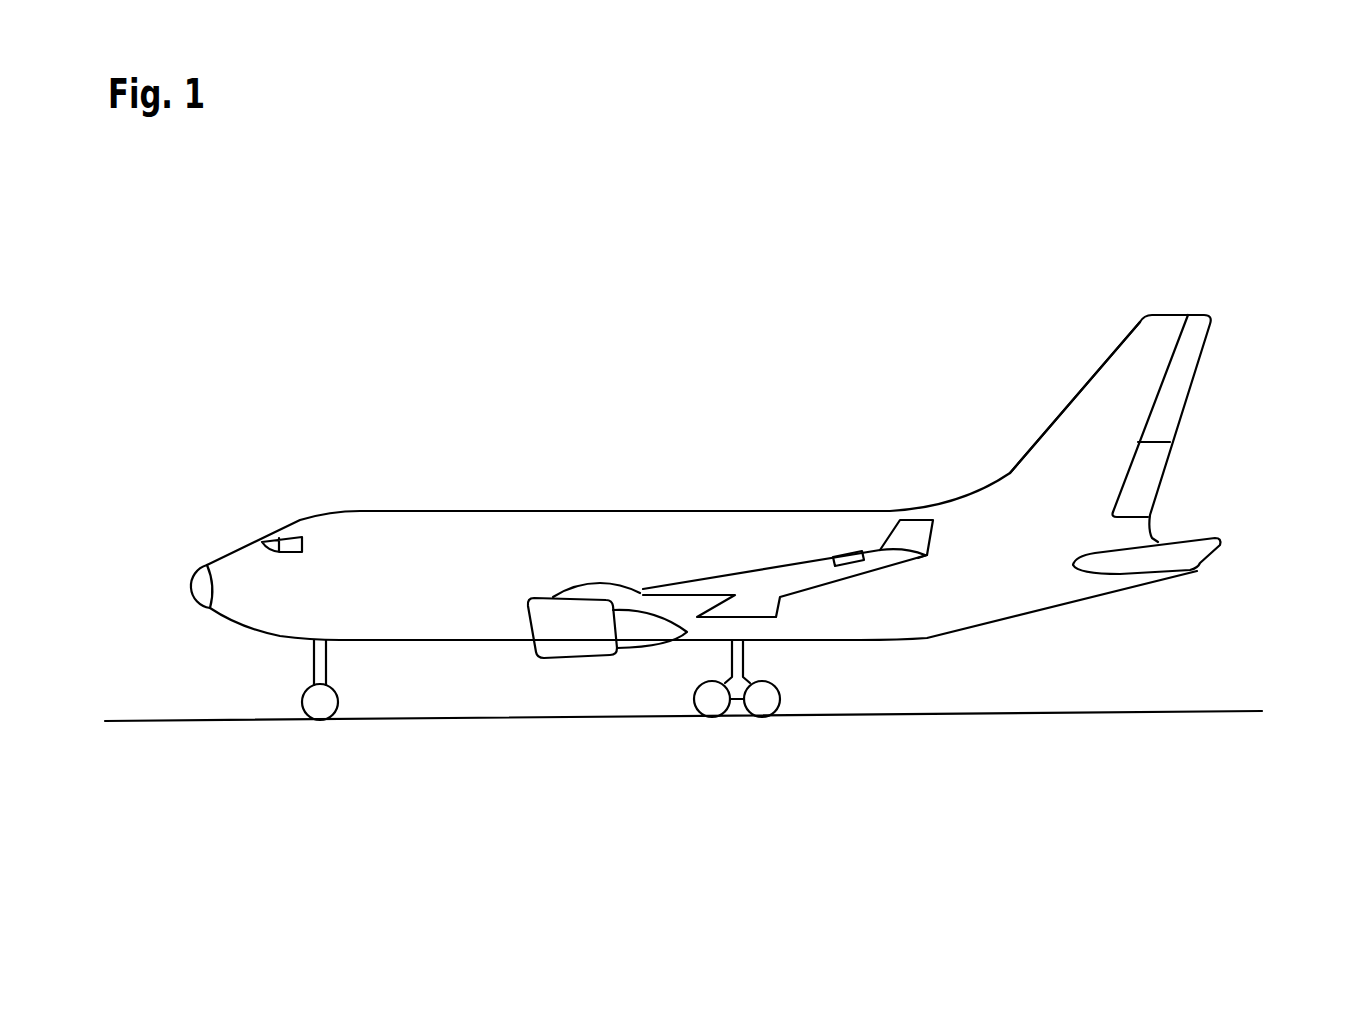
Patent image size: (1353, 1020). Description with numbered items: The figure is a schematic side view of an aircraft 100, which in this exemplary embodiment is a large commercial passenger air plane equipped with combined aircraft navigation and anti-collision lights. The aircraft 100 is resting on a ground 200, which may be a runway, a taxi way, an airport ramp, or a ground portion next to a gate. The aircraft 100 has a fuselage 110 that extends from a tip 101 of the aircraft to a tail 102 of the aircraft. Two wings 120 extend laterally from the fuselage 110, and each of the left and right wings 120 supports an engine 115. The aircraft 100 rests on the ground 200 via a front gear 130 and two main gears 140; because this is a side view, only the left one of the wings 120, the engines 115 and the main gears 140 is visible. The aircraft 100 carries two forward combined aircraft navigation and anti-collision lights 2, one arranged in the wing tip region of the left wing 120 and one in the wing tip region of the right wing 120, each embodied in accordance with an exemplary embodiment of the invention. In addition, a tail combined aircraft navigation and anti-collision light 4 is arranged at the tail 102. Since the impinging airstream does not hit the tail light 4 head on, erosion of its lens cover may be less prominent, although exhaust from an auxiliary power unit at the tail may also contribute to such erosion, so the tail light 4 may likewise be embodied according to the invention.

The aircraft 100 is at (940, 370).
The tip 101 is at (170, 576).
The tail 102 is at (1224, 511).
The fuselage 110 is at (660, 533).
The wing 120 is at (765, 583).
The combined aircraft navigation and anti-collision light 2 is at (847, 555).
The tail combined aircraft navigation and anti-collision light 4 is at (1209, 562).
The engine 115 is at (583, 645).
The front gear 130 is at (287, 699).
The main gear 140 is at (801, 692).
The ground 200 is at (1168, 713).